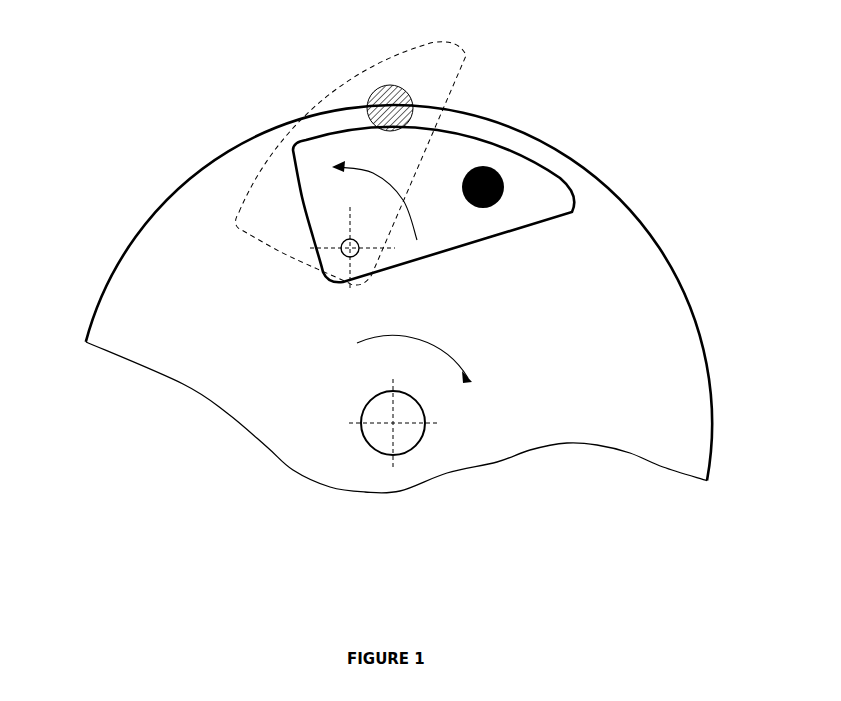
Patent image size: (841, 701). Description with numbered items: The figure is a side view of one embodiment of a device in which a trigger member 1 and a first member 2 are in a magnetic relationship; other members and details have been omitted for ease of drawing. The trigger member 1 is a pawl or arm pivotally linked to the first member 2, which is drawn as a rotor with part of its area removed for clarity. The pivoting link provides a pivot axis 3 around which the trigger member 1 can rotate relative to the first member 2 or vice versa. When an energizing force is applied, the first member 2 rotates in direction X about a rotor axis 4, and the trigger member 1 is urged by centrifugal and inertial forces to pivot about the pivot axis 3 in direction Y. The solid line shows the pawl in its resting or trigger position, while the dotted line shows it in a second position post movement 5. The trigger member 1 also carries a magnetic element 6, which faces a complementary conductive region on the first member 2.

The trigger member 1 is at (306, 160).
The first member 2 is at (541, 435).
The pivot axis 3 is at (337, 262).
The rotor axis 4 is at (403, 441).
The second position post movement 5 is at (343, 84).
The magnetic element 6 is at (490, 170).